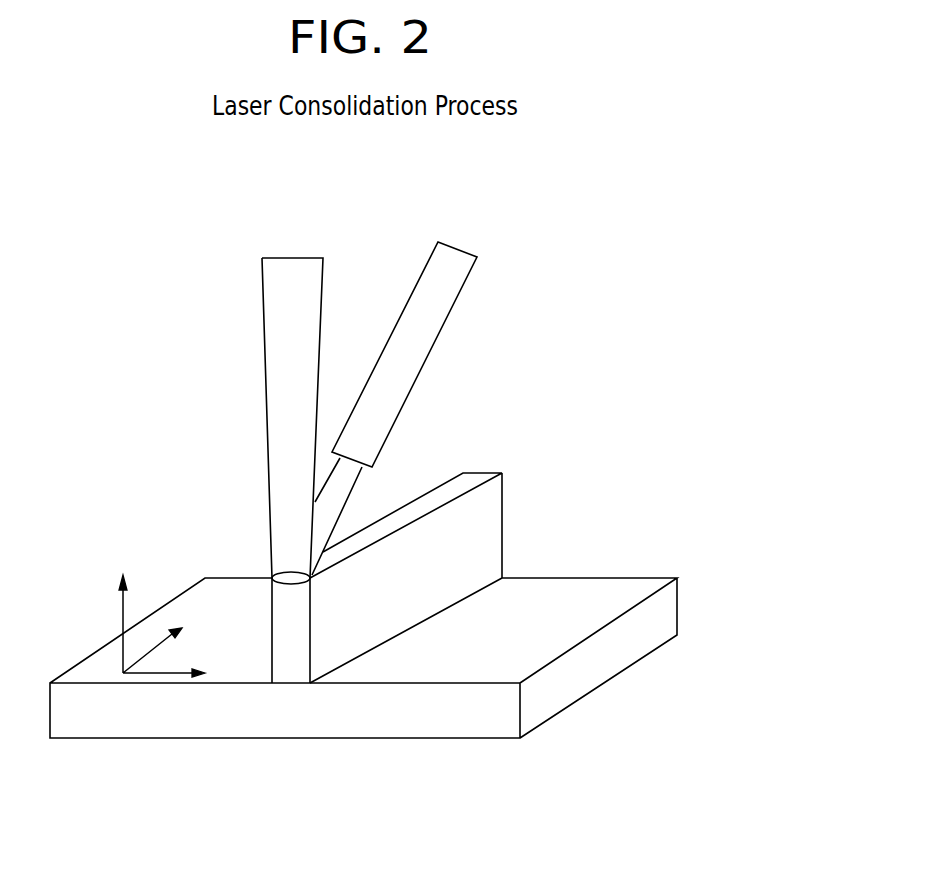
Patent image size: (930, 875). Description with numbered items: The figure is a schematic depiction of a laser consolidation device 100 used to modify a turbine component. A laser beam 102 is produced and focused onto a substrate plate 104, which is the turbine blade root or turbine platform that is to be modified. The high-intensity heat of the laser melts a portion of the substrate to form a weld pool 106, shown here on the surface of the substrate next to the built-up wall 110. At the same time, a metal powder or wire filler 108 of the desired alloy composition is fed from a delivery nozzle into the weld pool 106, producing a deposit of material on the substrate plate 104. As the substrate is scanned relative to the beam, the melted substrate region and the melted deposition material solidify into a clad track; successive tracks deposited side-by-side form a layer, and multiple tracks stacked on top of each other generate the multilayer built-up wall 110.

The laser consolidation device 100 is at (472, 192).
The laser beam 102 is at (265, 363).
The substrate plate 104 is at (170, 714).
The weld pool 106 is at (272, 571).
The powder or wire filler 108 is at (450, 312).
The built-up wall 110 is at (492, 502).